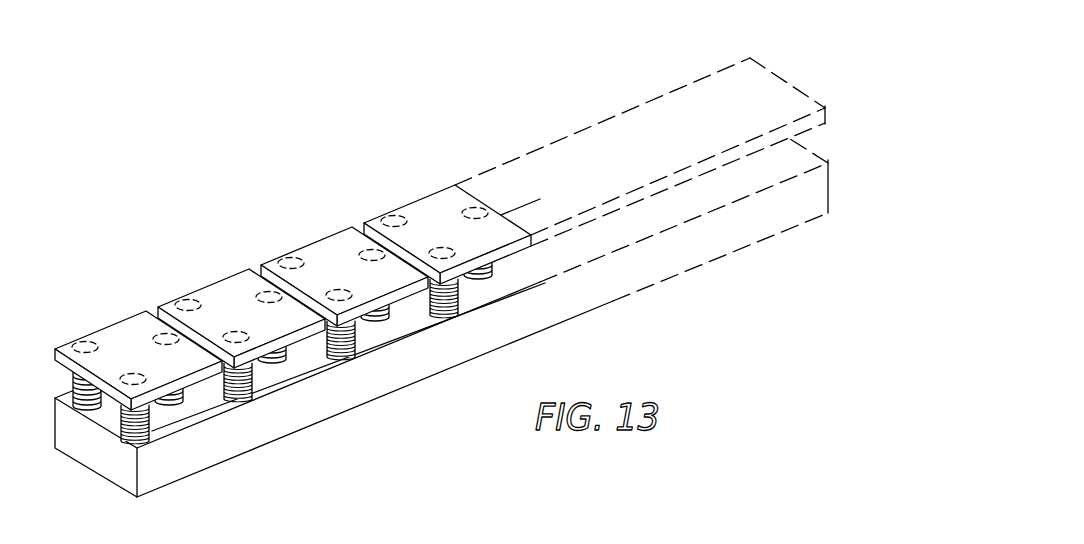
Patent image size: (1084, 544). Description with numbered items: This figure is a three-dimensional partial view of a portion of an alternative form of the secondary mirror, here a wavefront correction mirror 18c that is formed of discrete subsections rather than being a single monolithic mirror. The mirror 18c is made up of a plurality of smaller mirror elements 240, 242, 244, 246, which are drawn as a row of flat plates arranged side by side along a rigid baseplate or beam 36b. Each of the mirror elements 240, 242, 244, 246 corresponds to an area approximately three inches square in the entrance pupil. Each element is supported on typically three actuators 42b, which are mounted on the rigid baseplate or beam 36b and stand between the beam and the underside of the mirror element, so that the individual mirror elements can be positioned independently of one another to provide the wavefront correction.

The mirror 18c is at (441, 288).
The rigid baseplate or beam 36b is at (296, 414).
The actuators 42b is at (178, 400).
The mirror element 240 is at (120, 322).
The mirror element 242 is at (213, 284).
The mirror element 244 is at (313, 242).
The mirror element 246 is at (415, 203).